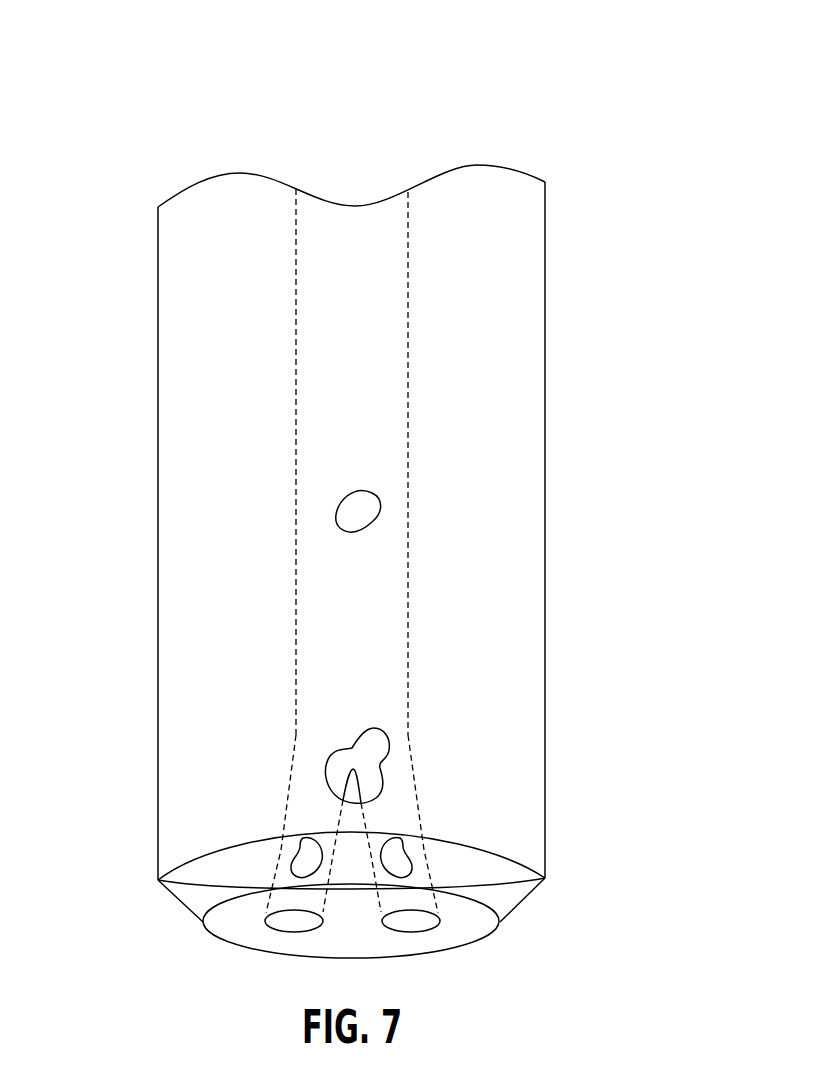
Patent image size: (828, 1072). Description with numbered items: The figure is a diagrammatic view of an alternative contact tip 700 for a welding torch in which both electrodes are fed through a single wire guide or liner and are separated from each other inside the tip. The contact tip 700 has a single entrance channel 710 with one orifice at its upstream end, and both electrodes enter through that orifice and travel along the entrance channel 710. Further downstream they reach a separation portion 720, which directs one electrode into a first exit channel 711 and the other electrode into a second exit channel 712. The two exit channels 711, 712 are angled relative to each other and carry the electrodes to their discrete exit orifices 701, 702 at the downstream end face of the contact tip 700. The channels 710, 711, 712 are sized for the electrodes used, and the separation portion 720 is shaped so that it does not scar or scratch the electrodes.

The contact tip 700 is at (567, 100).
The exit orifice 701 is at (287, 912).
The exit orifice 702 is at (411, 912).
The entrance channel 710 is at (362, 510).
The first exit channel 711 is at (303, 860).
The second exit channel 712 is at (397, 857).
The separation portion 720 is at (348, 777).